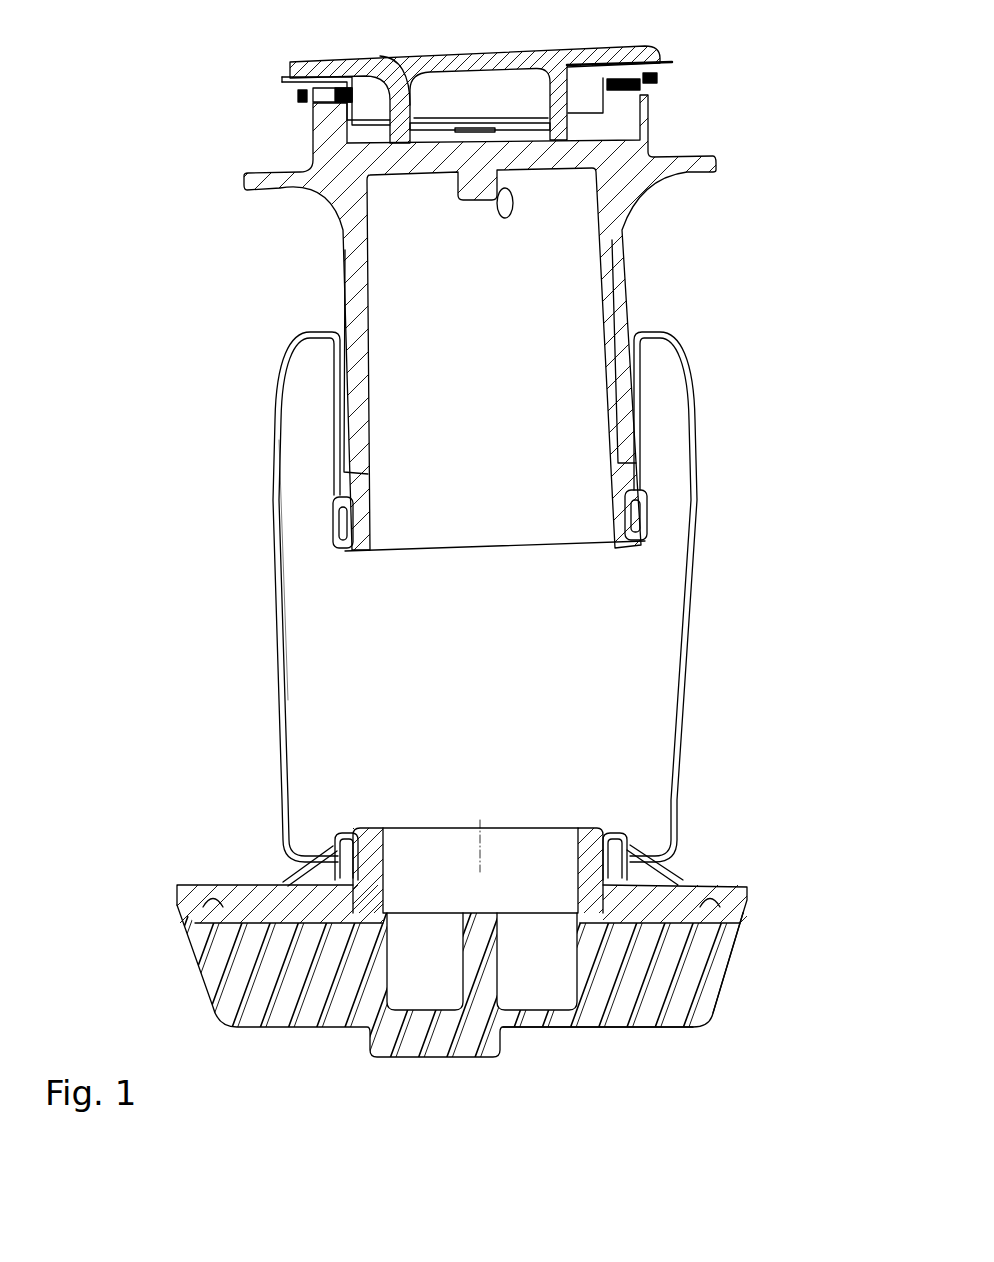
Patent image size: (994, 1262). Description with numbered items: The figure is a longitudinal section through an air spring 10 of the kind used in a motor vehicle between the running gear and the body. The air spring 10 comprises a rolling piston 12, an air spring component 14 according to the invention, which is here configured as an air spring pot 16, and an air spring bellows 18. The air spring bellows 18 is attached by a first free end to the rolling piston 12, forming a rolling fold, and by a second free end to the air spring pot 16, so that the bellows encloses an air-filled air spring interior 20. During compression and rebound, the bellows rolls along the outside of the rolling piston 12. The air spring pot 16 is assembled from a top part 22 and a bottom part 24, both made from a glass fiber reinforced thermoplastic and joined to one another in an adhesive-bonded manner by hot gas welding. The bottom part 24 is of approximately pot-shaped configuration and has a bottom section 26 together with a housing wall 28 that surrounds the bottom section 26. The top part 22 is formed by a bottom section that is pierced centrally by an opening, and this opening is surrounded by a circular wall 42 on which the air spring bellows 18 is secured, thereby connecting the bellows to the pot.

The air spring 10 is at (730, 85).
The rolling piston 12 is at (628, 144).
The air spring component 14 is at (747, 862).
The air spring pot 16 is at (698, 880).
The air spring bellows 18 is at (681, 673).
The air spring interior 20 is at (657, 628).
The top part 22 is at (248, 883).
The bottom part 24 is at (745, 947).
The bottom section 26 is at (643, 1025).
The housing wall 28 is at (713, 993).
The circular wall 42 is at (367, 840).